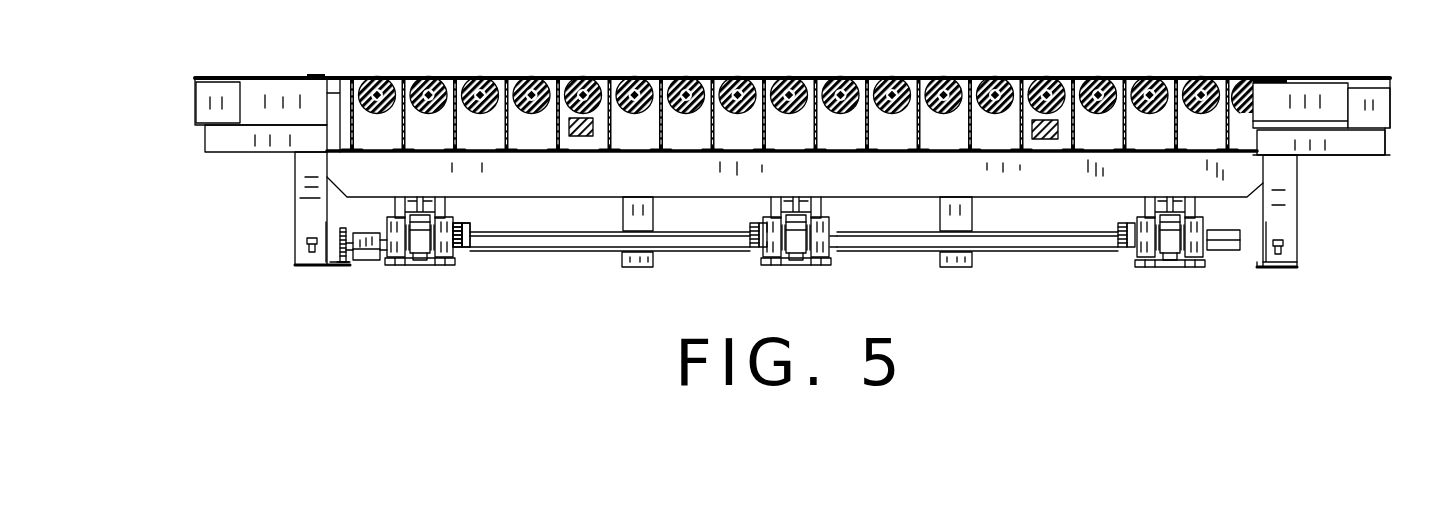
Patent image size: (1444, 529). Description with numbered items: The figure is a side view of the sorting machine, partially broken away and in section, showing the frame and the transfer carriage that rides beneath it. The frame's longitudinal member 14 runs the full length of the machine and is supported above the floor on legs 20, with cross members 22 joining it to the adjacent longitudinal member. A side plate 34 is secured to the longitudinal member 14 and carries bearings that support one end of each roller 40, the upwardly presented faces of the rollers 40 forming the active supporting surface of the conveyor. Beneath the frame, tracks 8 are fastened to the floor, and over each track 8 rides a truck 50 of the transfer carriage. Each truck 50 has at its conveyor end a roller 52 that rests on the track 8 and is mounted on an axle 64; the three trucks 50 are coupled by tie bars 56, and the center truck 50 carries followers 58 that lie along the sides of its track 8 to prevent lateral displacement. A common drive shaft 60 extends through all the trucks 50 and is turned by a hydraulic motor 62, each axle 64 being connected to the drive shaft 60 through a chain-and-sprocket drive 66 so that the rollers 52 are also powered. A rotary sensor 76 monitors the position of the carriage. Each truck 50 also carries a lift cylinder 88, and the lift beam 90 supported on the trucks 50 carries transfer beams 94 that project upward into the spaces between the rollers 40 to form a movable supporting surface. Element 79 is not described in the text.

The tracks 8 is at (457, 264).
The longitudinal member 14 is at (1367, 147).
The legs 20 is at (290, 218).
The cross members 22 is at (593, 126).
The side plate 34 is at (1313, 100).
The roller 40 is at (1197, 78).
The trucks 50 is at (455, 215).
The roller 52 is at (424, 243).
The tie bars 56 is at (568, 250).
The followers 58 is at (785, 262).
The drive shaft 60 is at (1000, 237).
The hydraulic motor 62 is at (1237, 252).
The axles 64 is at (438, 250).
The chain-and-sprocket drive 66 is at (477, 252).
The rotary sensor 76 is at (367, 262).
The foot bracket 79 is at (330, 265).
The lift cylinder 88 is at (1175, 197).
The lift beam 90 is at (1090, 178).
The transfer beams 94 is at (1125, 80).